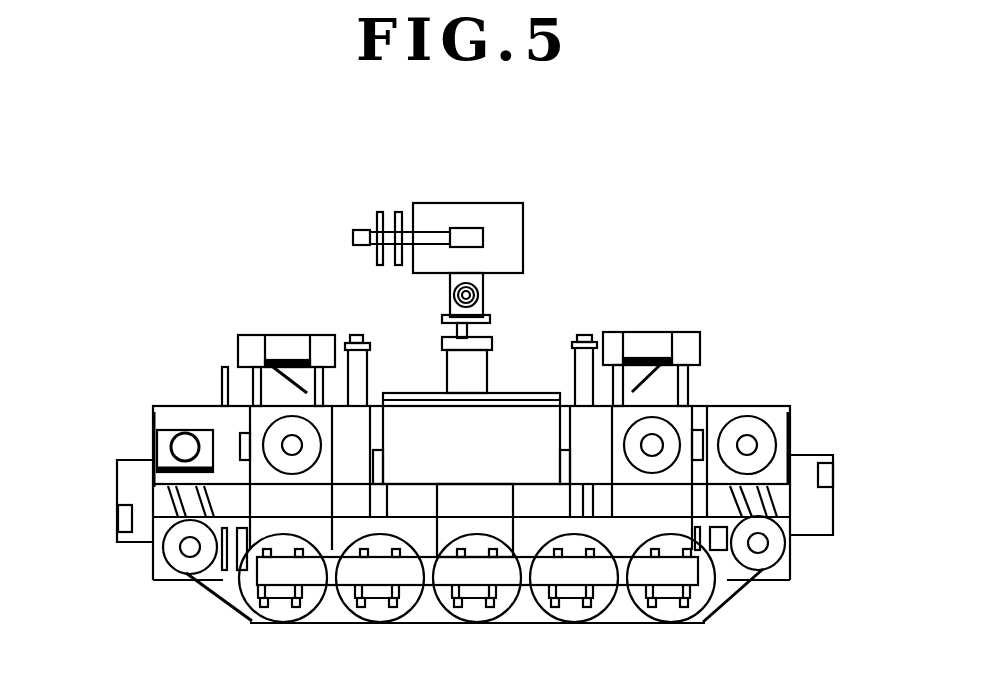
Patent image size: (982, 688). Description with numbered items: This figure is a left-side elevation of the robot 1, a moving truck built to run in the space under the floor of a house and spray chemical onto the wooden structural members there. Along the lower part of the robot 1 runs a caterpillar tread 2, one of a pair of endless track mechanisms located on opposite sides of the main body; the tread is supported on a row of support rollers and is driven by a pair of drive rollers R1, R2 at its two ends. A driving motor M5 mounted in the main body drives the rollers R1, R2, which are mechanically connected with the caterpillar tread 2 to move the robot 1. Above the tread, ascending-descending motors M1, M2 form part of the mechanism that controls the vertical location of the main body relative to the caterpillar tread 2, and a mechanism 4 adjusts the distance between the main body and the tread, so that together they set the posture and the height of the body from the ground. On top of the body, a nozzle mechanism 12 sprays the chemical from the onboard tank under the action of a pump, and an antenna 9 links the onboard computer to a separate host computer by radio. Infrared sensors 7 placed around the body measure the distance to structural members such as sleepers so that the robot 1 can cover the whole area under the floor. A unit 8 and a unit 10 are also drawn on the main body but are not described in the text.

The robot 1 is at (618, 200).
The caterpillar tread 2 is at (730, 603).
The mechanism 4 is at (305, 335).
The infrared sensor 7 is at (240, 435).
The main body 8 is at (517, 423).
The antenna 9 is at (220, 383).
The working unit 10 is at (487, 203).
The nozzle mechanism 12 is at (360, 231).
The ascending-descending motor M1 is at (278, 428).
The ascending-descending motor M2 is at (645, 423).
The driving motor M5 is at (747, 420).
The drive roller R1 is at (188, 577).
The drive roller R2 is at (767, 558).